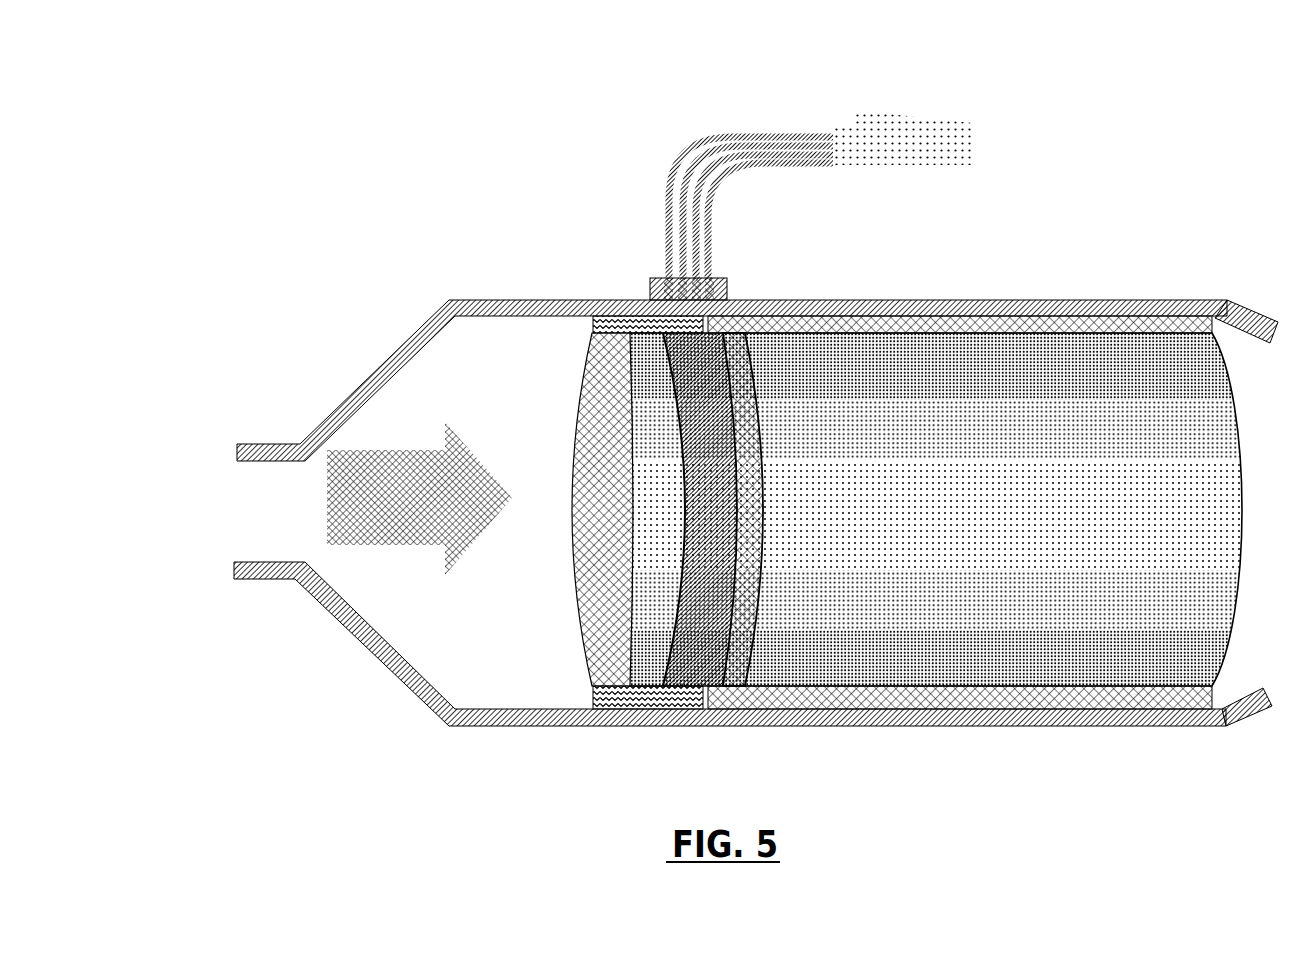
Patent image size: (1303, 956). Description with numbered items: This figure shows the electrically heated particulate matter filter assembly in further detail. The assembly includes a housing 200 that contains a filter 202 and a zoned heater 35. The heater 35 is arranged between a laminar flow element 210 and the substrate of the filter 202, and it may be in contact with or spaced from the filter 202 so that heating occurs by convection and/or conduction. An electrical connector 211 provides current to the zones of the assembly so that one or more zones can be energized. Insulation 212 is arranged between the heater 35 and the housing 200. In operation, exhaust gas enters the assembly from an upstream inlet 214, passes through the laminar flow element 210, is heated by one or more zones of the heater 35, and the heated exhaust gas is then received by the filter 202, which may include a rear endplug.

The housing 200 is at (945, 300).
The filter 202 is at (865, 498).
The laminar flow element 210 is at (622, 300).
The electrical connector 211 is at (960, 137).
The insulation 212 is at (592, 326).
The upstream inlet 214 is at (238, 513).
The zoned heater 35 is at (575, 458).